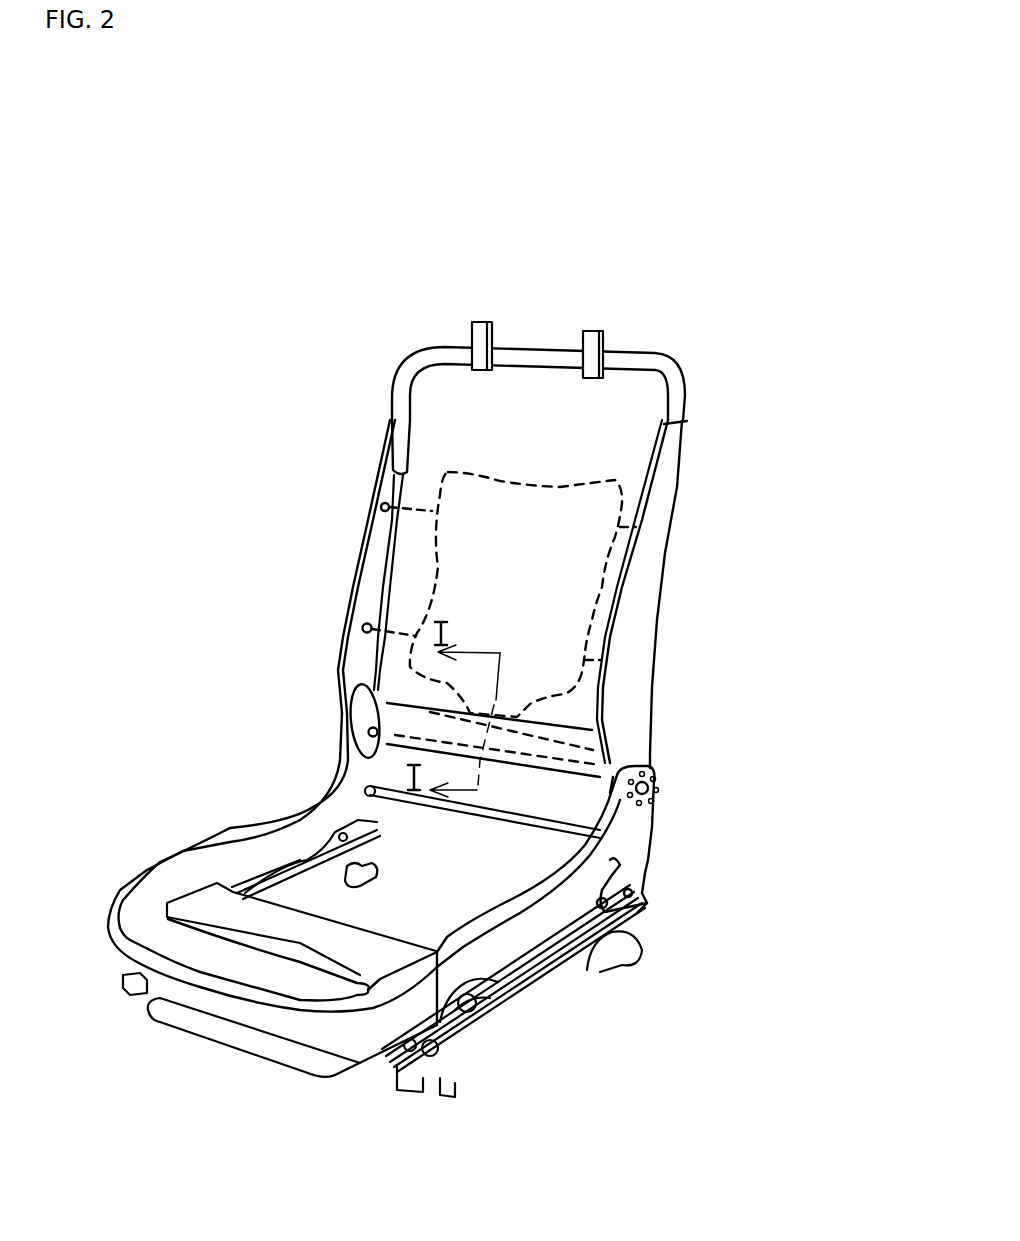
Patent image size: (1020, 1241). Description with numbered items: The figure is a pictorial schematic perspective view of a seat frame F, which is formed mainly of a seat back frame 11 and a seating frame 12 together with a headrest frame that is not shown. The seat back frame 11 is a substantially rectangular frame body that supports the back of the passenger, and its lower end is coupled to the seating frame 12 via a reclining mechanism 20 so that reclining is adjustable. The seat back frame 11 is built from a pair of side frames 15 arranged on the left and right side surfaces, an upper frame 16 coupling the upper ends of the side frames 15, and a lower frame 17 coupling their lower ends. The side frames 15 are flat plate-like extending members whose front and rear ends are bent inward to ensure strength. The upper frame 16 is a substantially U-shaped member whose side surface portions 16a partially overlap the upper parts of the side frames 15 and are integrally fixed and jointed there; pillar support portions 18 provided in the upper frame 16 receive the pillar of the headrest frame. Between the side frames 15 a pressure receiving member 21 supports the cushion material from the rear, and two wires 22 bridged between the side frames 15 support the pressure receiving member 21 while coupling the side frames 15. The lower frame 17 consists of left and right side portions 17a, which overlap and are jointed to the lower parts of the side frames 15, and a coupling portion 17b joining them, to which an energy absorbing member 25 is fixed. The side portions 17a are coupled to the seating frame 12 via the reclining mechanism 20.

The seat frame F is at (160, 221).
The seat back frame 11 is at (245, 400).
The seating frame 12 is at (190, 794).
The side frame 15 is at (660, 489).
The upper frame 16 is at (673, 370).
The side surface portion 16a is at (683, 398).
The lower frame 17 is at (226, 682).
The side portion 17a is at (362, 695).
The coupling portion 17b is at (370, 732).
The pillar support portion 18 is at (483, 321).
The reclining mechanism 20 is at (652, 774).
The pressure receiving member 21 is at (603, 553).
The wire 22 is at (402, 513).
The energy absorbing member 25 is at (540, 769).